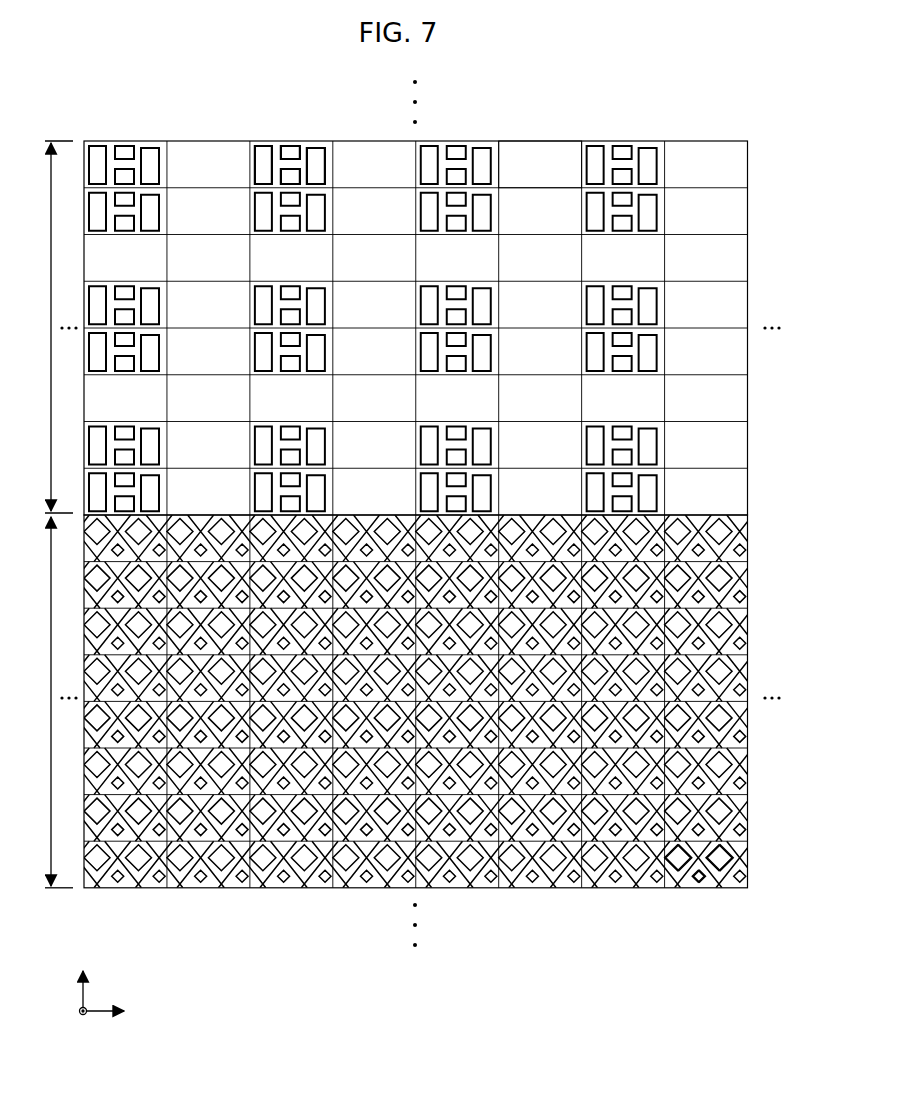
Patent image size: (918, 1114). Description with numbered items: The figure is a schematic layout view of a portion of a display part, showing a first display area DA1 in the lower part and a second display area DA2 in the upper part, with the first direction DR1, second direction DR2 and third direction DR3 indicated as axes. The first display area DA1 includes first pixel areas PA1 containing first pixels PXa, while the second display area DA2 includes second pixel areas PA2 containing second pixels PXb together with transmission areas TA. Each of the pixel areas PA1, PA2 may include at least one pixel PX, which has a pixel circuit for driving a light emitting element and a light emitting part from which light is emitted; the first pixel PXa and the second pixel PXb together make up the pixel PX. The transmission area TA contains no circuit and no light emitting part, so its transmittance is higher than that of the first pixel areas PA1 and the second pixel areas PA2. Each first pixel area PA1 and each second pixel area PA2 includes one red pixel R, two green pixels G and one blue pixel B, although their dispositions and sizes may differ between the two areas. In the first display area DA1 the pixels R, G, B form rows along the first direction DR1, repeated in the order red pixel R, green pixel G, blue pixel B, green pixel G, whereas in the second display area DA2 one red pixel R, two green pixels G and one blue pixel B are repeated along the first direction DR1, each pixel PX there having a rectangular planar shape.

The first pixel PXa is at (742, 563).
The second pixel PXb is at (622, 140).
The pixel PX is at (608, 1018).
The first pixel area PA1 is at (748, 862).
The second pixel area PA2 is at (458, 140).
The transmission area TA is at (545, 140).
The first display area DA1 is at (43, 702).
The second display area DA2 is at (43, 327).
The red pixel R is at (263, 150).
The green pixel G is at (283, 150).
The blue pixel B is at (318, 150).
The first direction DR1 is at (127, 1011).
The second direction DR2 is at (84, 971).
The third direction DR3 is at (67, 1026).